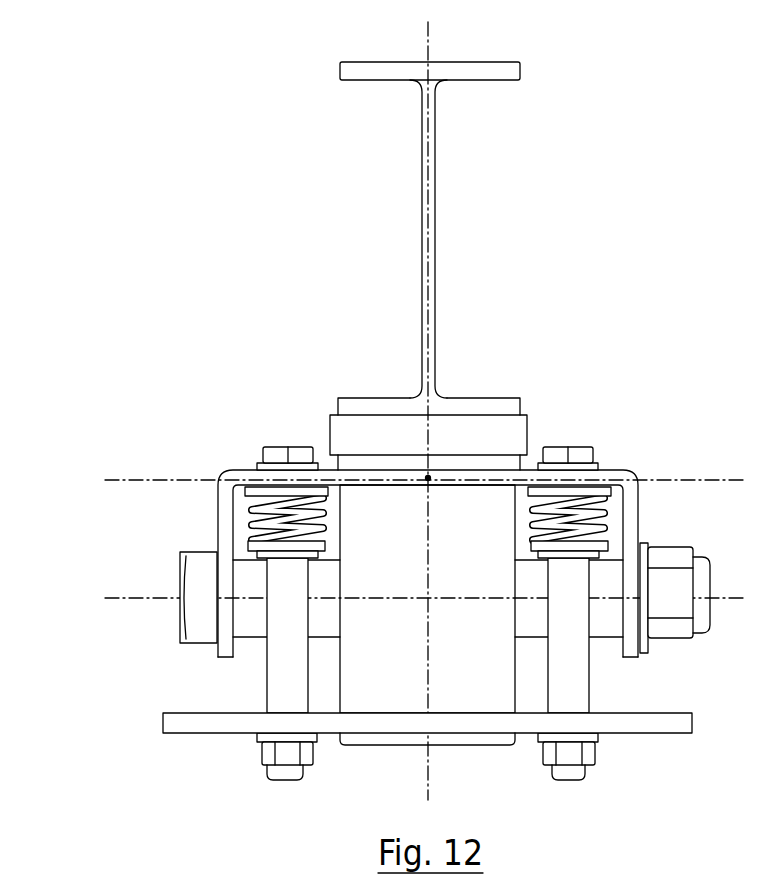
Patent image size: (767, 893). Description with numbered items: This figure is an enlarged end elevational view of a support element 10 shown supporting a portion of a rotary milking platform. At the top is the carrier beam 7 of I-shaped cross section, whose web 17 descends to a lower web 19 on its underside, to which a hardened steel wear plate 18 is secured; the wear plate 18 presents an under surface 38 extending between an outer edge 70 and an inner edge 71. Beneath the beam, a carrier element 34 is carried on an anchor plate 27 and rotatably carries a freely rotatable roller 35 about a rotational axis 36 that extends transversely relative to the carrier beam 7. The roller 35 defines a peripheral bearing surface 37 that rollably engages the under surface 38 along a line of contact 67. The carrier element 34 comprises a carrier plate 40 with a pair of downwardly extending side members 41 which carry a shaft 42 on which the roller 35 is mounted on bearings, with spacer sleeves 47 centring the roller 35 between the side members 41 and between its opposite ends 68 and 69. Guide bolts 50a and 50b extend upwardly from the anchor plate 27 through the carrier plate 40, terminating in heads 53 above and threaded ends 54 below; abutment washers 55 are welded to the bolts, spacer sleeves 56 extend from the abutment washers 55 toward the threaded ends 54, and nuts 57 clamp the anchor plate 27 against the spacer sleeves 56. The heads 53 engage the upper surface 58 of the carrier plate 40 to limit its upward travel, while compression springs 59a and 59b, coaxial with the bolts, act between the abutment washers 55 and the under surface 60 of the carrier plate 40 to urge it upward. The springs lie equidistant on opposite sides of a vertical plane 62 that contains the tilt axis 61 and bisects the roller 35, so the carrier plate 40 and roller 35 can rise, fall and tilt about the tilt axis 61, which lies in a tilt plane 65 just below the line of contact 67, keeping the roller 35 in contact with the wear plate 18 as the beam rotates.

The carrier beam 7 is at (430, 207).
The support element 10 is at (192, 820).
The beam web 17 is at (436, 218).
The wear plate 18 is at (475, 430).
The lower web 19 is at (388, 397).
The anchor plate 27 is at (670, 732).
The carrier element 34 is at (615, 472).
The roller 35 is at (350, 743).
The rotational axis 36 is at (120, 597).
The peripheral bearing surface 37 is at (363, 740).
The under surface 38 is at (370, 487).
The carrier plate 40 is at (613, 470).
The side members 41 is at (216, 655).
The shaft 42 is at (710, 592).
The spacer sleeves 47 is at (250, 582).
The guide bolt 50a is at (288, 508).
The guide bolt 50b is at (563, 537).
The heads 53 is at (300, 444).
The threaded ends 54 is at (287, 782).
The abutment washers 55 is at (258, 572).
The spacer sleeves 56 is at (282, 703).
The nuts 57 is at (258, 750).
The upper surface 58 is at (483, 468).
The compression spring 59a is at (262, 523).
The compression spring 59b is at (540, 523).
The under surface 60 is at (332, 490).
The tilt axis 61 is at (427, 477).
The vertical plane 62 is at (427, 766).
The tilt plane 65 is at (658, 477).
The line of contact 67 is at (455, 455).
The end of roller 68 is at (340, 675).
The end of roller 69 is at (515, 680).
The outer edge 70 is at (337, 432).
The inner edge 71 is at (521, 462).